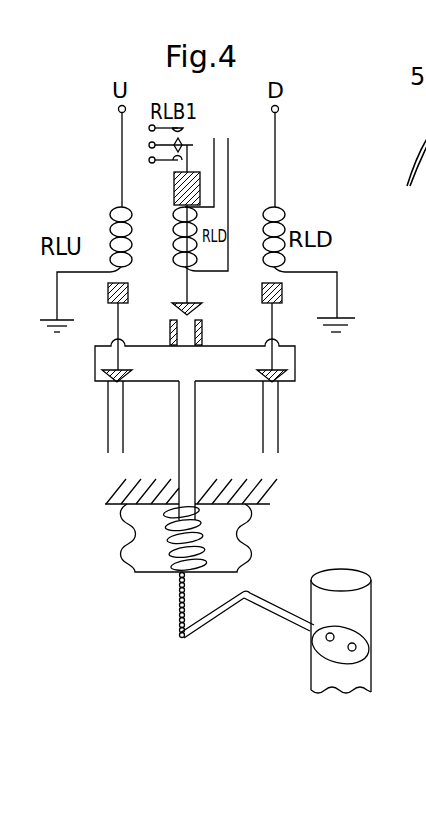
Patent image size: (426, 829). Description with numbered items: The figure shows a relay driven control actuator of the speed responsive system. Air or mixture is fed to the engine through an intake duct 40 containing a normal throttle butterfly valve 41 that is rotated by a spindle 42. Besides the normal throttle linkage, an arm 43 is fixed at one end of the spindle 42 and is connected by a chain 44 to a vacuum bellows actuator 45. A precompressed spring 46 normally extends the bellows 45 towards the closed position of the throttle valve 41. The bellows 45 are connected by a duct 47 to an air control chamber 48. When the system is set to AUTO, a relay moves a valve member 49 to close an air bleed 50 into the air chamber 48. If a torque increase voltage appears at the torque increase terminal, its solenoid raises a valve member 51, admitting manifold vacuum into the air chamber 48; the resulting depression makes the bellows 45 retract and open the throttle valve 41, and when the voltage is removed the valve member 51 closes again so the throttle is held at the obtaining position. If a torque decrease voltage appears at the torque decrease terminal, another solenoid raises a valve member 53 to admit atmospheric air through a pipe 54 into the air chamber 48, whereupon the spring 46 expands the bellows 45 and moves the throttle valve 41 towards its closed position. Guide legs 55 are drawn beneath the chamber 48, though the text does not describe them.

The intake duct 40 is at (372, 594).
The throttle butterfly valve 41 is at (357, 656).
The spindle 42 is at (263, 602).
The arm 43 is at (220, 614).
The chain 44 is at (177, 592).
The vacuum bellows actuator 45 is at (124, 539).
The precompressed spring 46 is at (205, 539).
The duct 47 is at (188, 428).
The air control chamber 48 is at (198, 372).
The valve member 49 is at (191, 301).
The air bleed 50 is at (203, 329).
The valve member 51 is at (96, 366).
The valve member 53 is at (288, 365).
The pipe 54 is at (280, 425).
The guide leg 55 is at (108, 421).